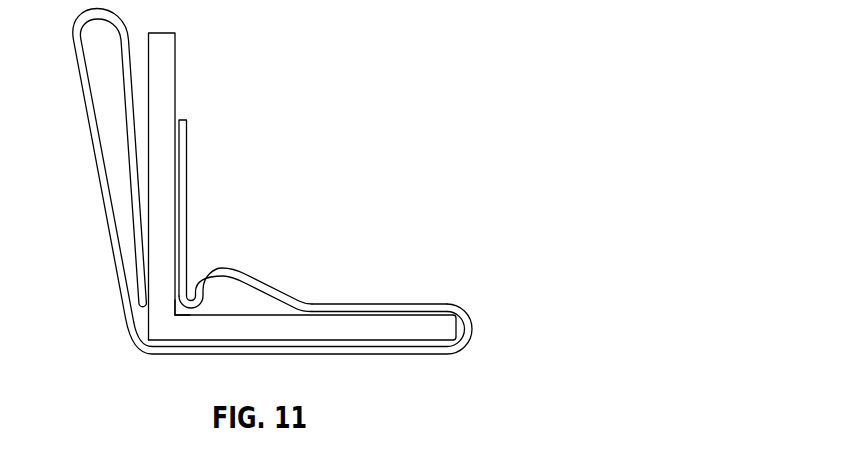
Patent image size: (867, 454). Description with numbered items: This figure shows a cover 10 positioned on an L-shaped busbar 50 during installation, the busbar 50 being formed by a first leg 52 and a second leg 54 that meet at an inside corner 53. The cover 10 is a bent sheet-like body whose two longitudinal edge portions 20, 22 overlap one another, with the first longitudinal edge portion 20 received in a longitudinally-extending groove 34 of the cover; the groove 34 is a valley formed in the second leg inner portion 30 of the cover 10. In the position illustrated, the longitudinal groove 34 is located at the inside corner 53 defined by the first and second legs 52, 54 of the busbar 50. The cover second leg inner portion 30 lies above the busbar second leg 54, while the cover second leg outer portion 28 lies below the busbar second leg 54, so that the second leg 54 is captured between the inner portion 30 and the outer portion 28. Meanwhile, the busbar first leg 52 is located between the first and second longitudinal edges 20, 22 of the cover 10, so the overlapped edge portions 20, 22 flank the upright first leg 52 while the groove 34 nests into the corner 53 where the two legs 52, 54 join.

The cover 10 is at (272, 221).
The first longitudinal edge portion 20 is at (128, 170).
The second longitudinal edge portion 22 is at (187, 149).
The second leg outer portion 28 is at (366, 358).
The second leg inner portion 30 is at (335, 291).
The groove 34 is at (194, 265).
The L-shaped busbar 50 is at (255, 207).
The first leg of busbar 52 is at (175, 87).
The inside corner 53 is at (173, 310).
The second leg of busbar 54 is at (422, 328).